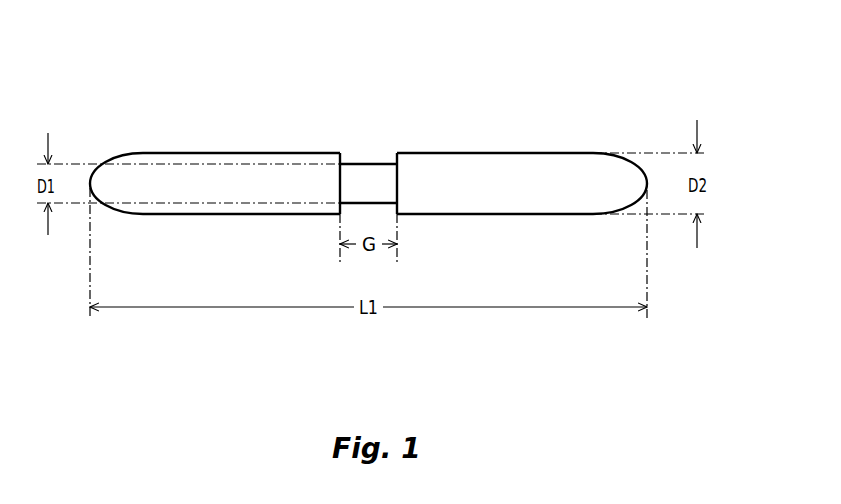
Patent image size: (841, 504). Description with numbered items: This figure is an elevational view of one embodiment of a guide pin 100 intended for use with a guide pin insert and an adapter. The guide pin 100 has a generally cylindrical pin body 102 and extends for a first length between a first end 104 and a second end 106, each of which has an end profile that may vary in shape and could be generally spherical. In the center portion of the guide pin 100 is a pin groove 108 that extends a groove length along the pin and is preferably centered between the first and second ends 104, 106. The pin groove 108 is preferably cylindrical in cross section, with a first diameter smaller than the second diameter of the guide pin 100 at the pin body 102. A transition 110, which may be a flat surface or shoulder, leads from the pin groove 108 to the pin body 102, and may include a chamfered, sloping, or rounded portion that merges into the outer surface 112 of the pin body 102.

The guide pin 100 is at (585, 100).
The pin body 102 is at (498, 216).
The first end 104 is at (85, 180).
The second end 106 is at (648, 146).
The pin groove 108 is at (362, 146).
The transition 110 is at (342, 157).
The outer surface 112 is at (493, 152).